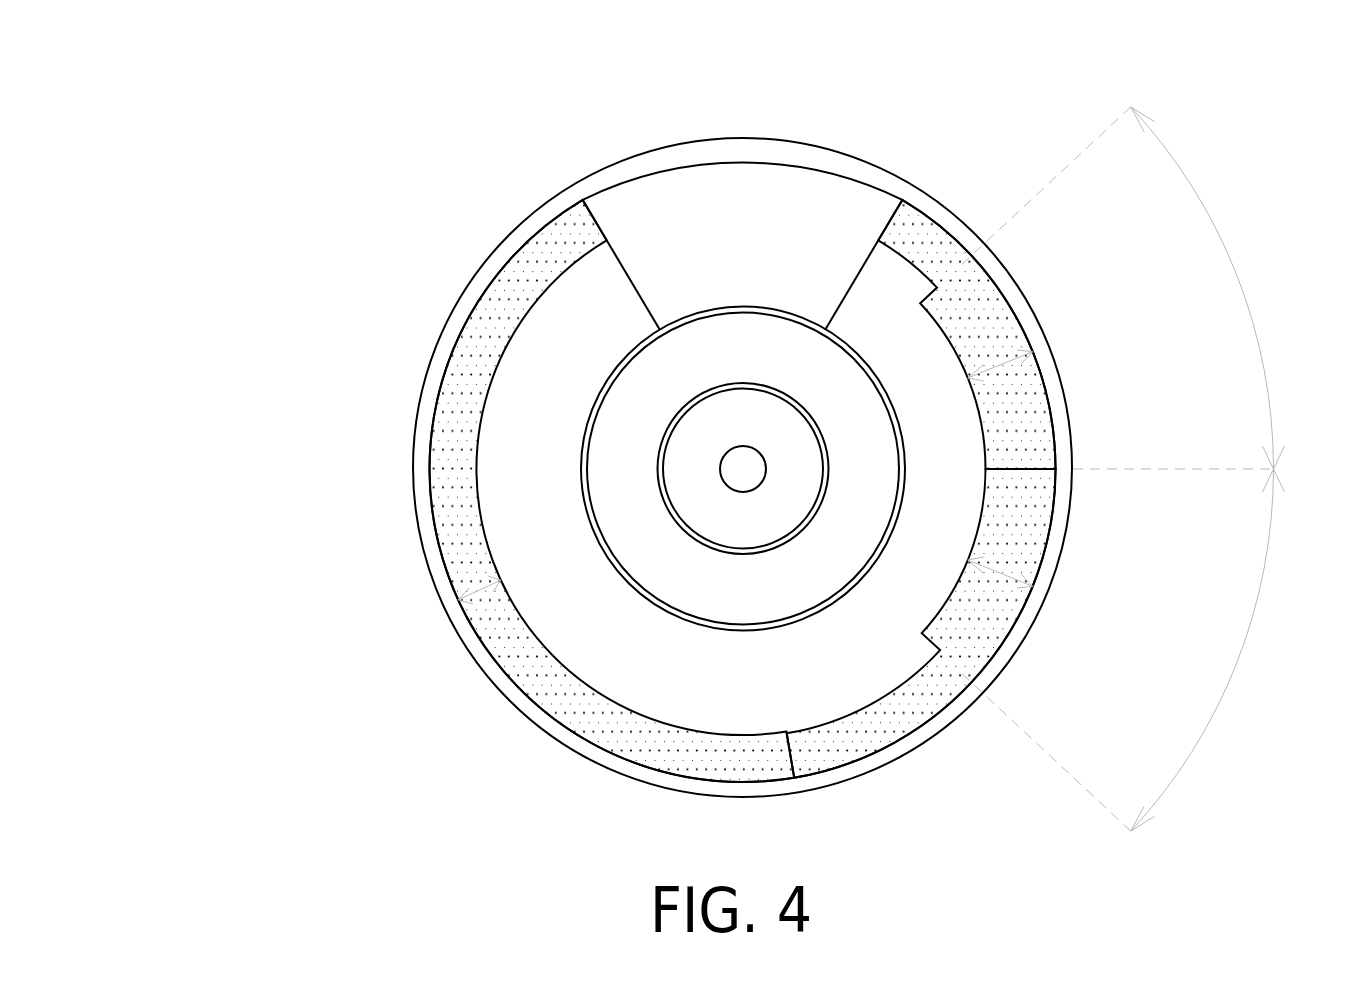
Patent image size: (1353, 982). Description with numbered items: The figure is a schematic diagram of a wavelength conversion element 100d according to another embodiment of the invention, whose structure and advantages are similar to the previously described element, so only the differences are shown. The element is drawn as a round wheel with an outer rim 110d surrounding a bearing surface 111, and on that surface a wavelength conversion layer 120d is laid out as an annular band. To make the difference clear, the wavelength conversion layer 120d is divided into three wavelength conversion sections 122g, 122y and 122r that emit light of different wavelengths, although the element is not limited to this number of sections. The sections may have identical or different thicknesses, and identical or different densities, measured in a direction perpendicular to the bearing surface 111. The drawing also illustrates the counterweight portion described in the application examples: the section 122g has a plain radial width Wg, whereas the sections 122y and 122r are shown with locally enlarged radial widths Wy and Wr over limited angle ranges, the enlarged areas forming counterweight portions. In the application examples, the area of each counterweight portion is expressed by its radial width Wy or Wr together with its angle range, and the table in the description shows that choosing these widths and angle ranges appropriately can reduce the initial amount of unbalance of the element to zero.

The wavelength conversion element 100d is at (252, 184).
The substrate / ring 110d is at (771, 136).
The wavelength conversion layer 120d is at (608, 471).
The wavelength conversion section 122y is at (920, 233).
The wavelength conversion section 122r is at (898, 712).
The wavelength conversion section 122g is at (457, 511).
The bearing surface 111 is at (643, 673).
The radial width Wy is at (1005, 367).
The radial width Wr is at (1005, 570).
The radial width Wg is at (481, 592).